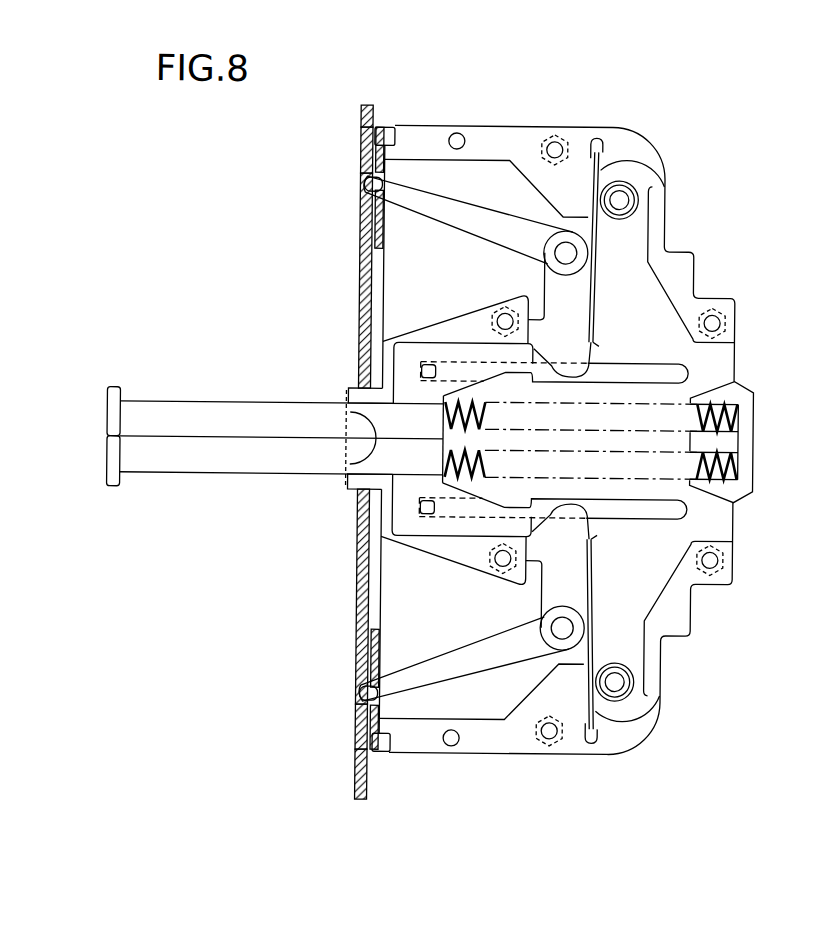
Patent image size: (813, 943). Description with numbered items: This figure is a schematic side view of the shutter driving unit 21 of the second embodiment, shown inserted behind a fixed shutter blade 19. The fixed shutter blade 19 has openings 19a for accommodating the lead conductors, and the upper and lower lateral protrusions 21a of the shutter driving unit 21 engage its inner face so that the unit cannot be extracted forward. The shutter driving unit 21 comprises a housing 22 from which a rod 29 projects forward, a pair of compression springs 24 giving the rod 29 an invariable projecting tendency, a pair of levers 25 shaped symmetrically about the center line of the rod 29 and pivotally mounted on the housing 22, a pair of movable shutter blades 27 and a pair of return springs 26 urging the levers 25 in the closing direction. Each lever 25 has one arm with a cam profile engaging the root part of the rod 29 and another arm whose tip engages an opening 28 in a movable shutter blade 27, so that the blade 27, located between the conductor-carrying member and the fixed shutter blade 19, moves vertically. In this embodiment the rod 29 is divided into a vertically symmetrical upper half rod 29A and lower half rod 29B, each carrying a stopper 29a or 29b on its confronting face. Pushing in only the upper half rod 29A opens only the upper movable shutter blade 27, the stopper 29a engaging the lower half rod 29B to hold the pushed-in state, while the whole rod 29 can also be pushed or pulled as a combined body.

The fixed shutter blade 19 is at (366, 300).
The opening 19a is at (362, 132).
The shutter driving unit 21 is at (742, 558).
The lateral protrusion 21a is at (384, 130).
The housing 22 is at (682, 280).
The compression spring 24 is at (737, 463).
The lever 25 is at (448, 217).
The return spring 26 is at (666, 197).
The movable shutter blade 27 is at (369, 226).
The opening 28 is at (362, 190).
The rod 29 is at (223, 428).
The upper half rod 29A is at (246, 412).
The lower half rod 29B is at (246, 462).
The stopper 29a is at (345, 466).
The stopper 29b is at (352, 407).